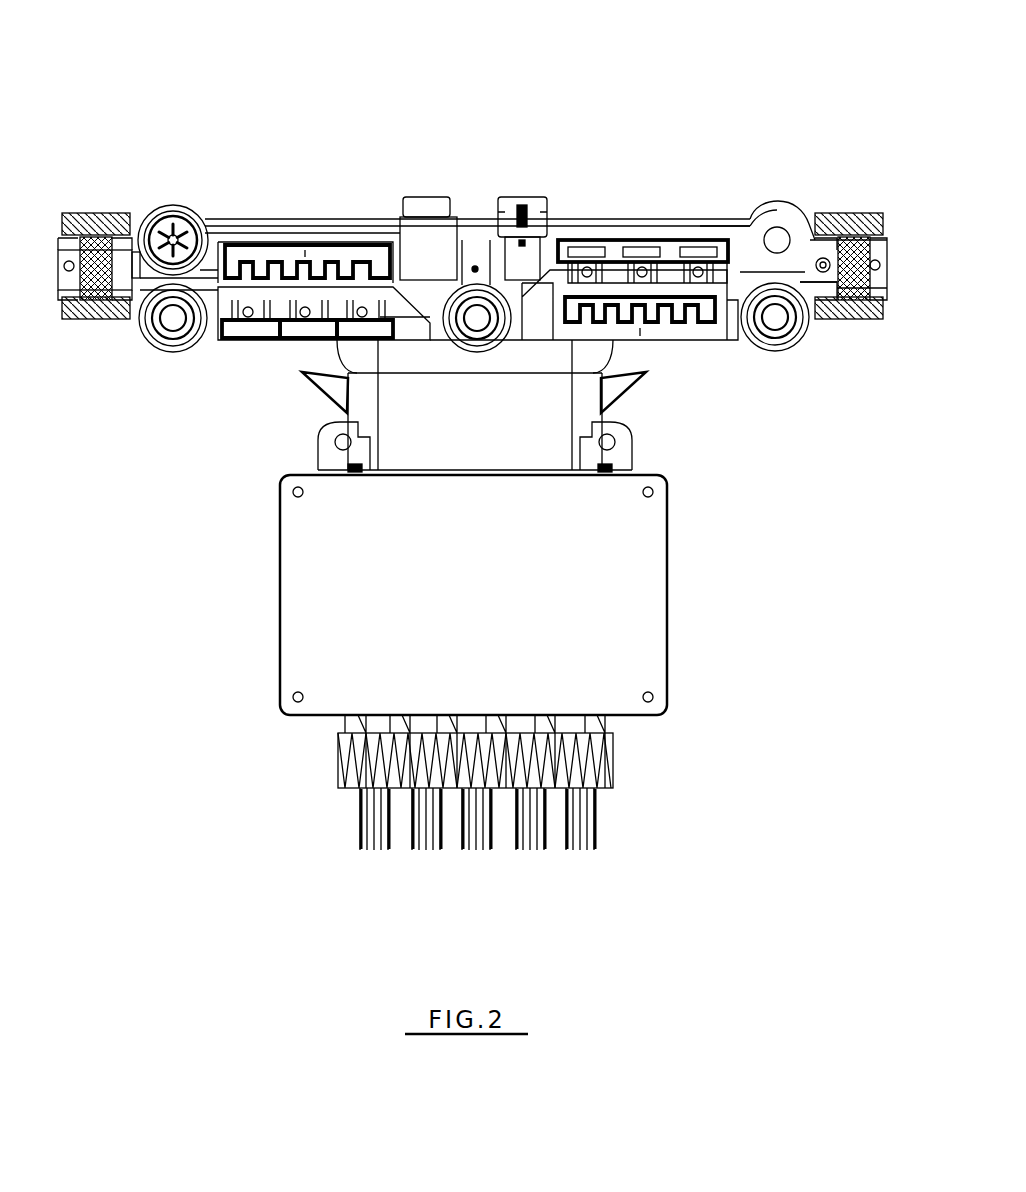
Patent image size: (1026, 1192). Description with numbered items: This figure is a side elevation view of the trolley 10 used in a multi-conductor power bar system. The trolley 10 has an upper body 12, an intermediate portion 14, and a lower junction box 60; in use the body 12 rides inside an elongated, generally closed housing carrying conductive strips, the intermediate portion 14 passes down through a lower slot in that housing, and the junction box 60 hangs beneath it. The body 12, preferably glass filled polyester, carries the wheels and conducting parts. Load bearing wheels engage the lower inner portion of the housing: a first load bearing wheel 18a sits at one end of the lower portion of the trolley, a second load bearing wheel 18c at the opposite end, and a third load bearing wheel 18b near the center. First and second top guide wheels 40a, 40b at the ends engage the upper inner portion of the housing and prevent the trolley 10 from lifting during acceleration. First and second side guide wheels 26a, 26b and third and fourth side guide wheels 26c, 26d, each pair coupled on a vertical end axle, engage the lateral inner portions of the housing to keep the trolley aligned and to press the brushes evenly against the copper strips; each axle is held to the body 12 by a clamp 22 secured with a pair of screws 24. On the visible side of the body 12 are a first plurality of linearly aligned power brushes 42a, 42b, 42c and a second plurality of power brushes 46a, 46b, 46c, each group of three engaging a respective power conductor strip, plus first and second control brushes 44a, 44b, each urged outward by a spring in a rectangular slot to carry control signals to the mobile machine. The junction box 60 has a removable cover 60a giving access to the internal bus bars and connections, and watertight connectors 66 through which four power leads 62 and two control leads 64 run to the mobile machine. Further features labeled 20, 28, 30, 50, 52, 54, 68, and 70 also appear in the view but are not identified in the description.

The trolley 10 is at (216, 582).
The upper body 12 is at (735, 228).
The intermediate portion 14 is at (545, 410).
The first load bearing wheel 18a is at (176, 324).
The third load bearing wheel 18b is at (472, 326).
The second load bearing wheel 18c is at (781, 332).
The spring contact 20 is at (93, 303).
The clamp 22 is at (56, 232).
The screws 24 is at (62, 276).
The first side guide wheel 26a is at (96, 214).
The second side guide wheel 26b is at (118, 322).
The third side guide wheel 26c is at (860, 212).
The fourth side guide wheel 26d is at (865, 320).
The pin 28 is at (471, 258).
The mounting hole 30 is at (779, 230).
The first top guide wheel 40a is at (172, 203).
The second top guide wheel 40b is at (794, 210).
The power brush 42a is at (246, 328).
The power brush 42b is at (316, 325).
The power brush 42c is at (372, 302).
The first control brush 44a is at (433, 206).
The second control brush 44b is at (525, 200).
The power brush 46a is at (590, 248).
The power brush 46b is at (642, 260).
The power brush 46c is at (700, 252).
The fuse block 50 is at (647, 243).
The connector block 52 is at (274, 286).
The connector block 54 is at (617, 272).
The junction box 60 is at (640, 570).
The removable cover 60a is at (490, 591).
The power leads 62 is at (602, 826).
The control leads 64 is at (497, 840).
The watertight connectors 66 is at (600, 750).
The connector seal 68 is at (343, 468).
The bus bar tab 70 is at (713, 232).